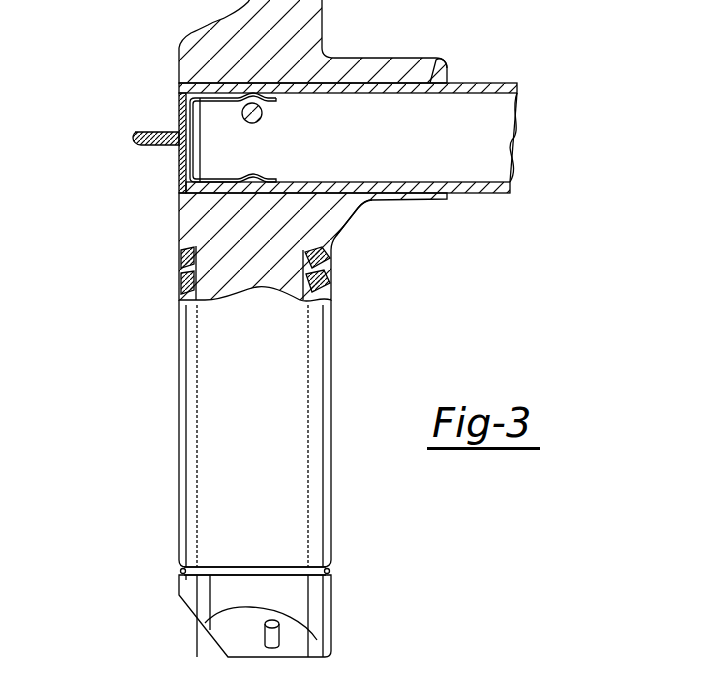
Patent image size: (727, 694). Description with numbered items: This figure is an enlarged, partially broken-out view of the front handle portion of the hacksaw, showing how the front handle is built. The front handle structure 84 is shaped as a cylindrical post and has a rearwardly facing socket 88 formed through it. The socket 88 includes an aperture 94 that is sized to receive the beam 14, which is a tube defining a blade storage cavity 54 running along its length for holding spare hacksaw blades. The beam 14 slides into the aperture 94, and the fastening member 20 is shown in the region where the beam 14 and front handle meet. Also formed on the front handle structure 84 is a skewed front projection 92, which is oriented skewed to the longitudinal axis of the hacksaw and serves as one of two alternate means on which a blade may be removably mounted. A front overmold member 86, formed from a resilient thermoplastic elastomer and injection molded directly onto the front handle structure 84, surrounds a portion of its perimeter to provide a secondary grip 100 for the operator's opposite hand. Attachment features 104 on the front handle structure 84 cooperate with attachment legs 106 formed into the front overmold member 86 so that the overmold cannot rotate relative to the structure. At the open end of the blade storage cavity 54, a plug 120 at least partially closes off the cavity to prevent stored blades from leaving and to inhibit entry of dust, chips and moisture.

The beam 14 is at (505, 83).
The fastening member 20 is at (262, 110).
The blade storage cavity 54 is at (500, 160).
The front handle structure 84 is at (330, 242).
The front overmold member 86 is at (327, 273).
The rearwardly facing socket 88 is at (456, 202).
The skewed front projection 92 is at (277, 655).
The aperture 94 is at (440, 58).
The secondary grip 100 is at (221, 477).
The attachment features 104 is at (247, 297).
The attachment legs 106 is at (305, 267).
The plug 120 is at (150, 108).